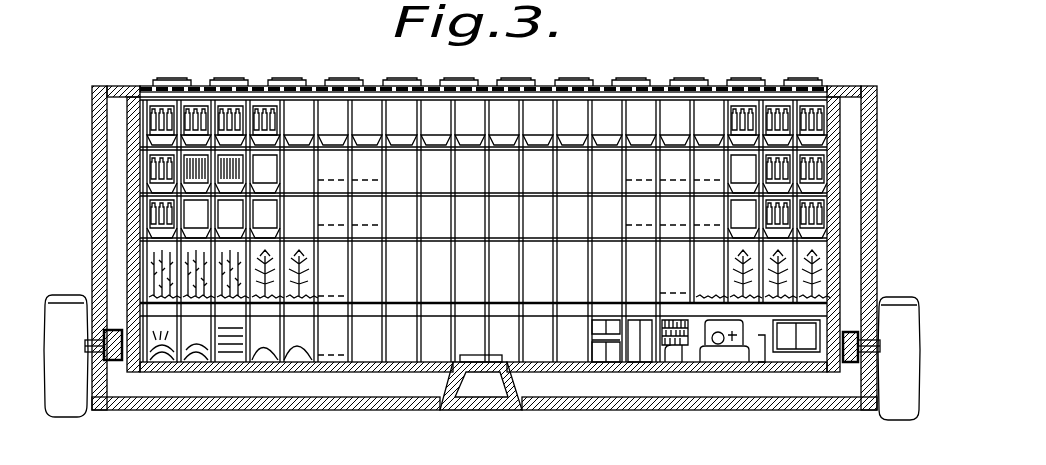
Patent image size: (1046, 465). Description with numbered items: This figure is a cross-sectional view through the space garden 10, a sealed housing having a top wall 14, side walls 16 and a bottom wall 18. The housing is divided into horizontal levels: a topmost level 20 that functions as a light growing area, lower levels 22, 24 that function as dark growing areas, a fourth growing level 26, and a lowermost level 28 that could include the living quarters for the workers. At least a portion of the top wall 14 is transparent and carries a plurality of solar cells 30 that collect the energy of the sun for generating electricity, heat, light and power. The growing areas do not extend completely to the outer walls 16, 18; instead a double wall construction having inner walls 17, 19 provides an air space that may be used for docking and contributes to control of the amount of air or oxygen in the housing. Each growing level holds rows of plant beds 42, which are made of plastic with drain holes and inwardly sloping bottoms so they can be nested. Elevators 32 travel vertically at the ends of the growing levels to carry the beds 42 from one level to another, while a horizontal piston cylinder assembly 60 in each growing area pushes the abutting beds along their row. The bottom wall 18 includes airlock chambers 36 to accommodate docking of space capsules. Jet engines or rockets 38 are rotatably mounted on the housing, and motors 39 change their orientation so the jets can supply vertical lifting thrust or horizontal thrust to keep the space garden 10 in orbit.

The space garden 10 is at (487, 245).
The top wall 14 is at (773, 86).
The side walls 16 is at (95, 203).
The inner wall 17 is at (840, 208).
The bottom wall 18 is at (745, 402).
The inner wall 19 is at (662, 372).
The topmost level 20 is at (614, 133).
The lower level 22 is at (614, 186).
The lower level 24 is at (614, 227).
The fourth growing level 26 is at (684, 287).
The lowermost level 28 is at (693, 362).
The solar cells 30 is at (276, 80).
The elevator 32 is at (282, 118).
The airlock chamber 36 is at (450, 395).
The jet engines or rockets 38 is at (50, 295).
The motors 39 is at (110, 362).
The bed 42 is at (362, 140).
The piston cylinder assembly 60 is at (656, 118).